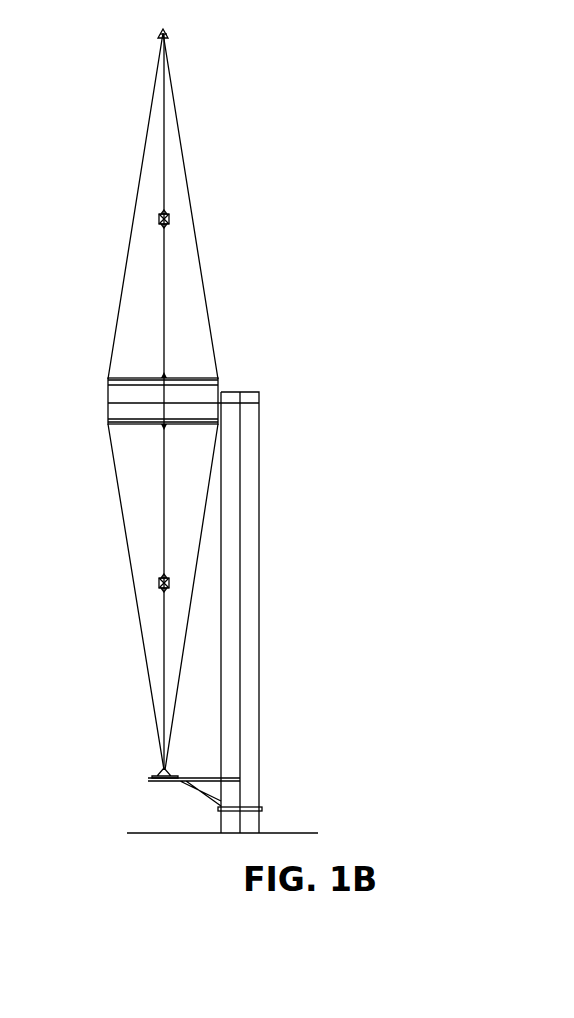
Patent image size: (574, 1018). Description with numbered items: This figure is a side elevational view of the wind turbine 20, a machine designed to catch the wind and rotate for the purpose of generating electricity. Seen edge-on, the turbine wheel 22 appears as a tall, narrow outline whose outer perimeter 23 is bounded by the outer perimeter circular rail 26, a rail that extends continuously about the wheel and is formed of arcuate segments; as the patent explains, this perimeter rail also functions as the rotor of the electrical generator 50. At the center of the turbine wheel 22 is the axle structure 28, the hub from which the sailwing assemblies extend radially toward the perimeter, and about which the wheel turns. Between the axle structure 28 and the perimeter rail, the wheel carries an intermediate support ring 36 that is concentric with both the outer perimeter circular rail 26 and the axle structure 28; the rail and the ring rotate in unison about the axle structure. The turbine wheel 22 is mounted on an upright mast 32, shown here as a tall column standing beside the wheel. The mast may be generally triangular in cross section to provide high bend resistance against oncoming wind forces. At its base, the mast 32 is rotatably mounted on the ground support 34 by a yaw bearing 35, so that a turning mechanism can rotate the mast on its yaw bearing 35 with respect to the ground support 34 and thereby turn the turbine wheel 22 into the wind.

The wind turbine 20 is at (134, 127).
The turbine wheel 22 is at (131, 208).
The outer perimeter 23 is at (160, 31).
The outer perimeter circular rail 26 is at (166, 31).
The axle structure 28 is at (102, 396).
The upright mast 32 is at (250, 689).
The ground support 34 is at (233, 823).
The yaw bearing 35 is at (260, 808).
The intermediate support ring 36 is at (169, 218).
The electrical generator 50 is at (175, 776).